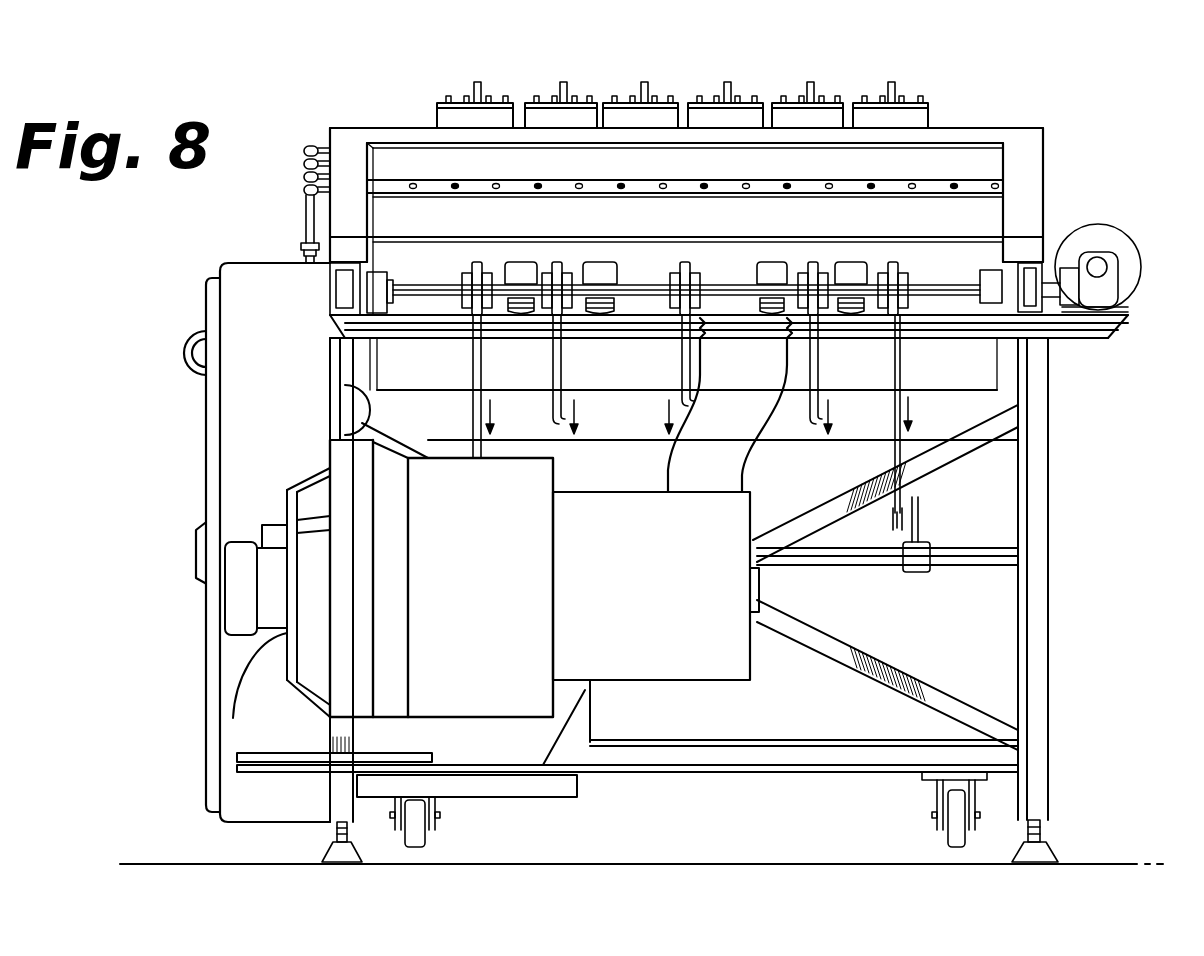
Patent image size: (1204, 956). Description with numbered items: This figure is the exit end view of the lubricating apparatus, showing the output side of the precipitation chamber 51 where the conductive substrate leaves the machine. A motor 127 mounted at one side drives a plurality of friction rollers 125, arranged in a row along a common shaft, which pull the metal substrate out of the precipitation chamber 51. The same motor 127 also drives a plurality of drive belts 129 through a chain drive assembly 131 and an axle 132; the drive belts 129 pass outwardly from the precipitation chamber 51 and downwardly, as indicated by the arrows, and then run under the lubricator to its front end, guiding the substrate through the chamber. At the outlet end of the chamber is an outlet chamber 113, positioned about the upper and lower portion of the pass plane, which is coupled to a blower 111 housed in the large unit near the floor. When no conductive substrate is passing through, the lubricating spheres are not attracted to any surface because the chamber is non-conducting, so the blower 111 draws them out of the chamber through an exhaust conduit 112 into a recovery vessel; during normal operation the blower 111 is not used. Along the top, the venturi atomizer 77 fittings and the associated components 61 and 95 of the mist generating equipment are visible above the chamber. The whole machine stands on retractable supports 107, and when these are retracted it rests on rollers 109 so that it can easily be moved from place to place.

The precipitation chamber 51 is at (800, 176).
The manifold blocks 61 is at (762, 103).
The venturi atomizer 77 is at (900, 102).
The nozzles 95 is at (562, 83).
The supports 107 is at (337, 832).
The rollers 109 is at (421, 846).
The blower 111 is at (493, 573).
The exhaust conduit 112 is at (745, 470).
The outlet chamber 113 is at (848, 226).
The friction rollers 125 is at (766, 263).
The motor 127 is at (1098, 252).
The drive belts 129 is at (494, 386).
The chain drive assembly 131 is at (1080, 300).
The axle 132 is at (944, 292).